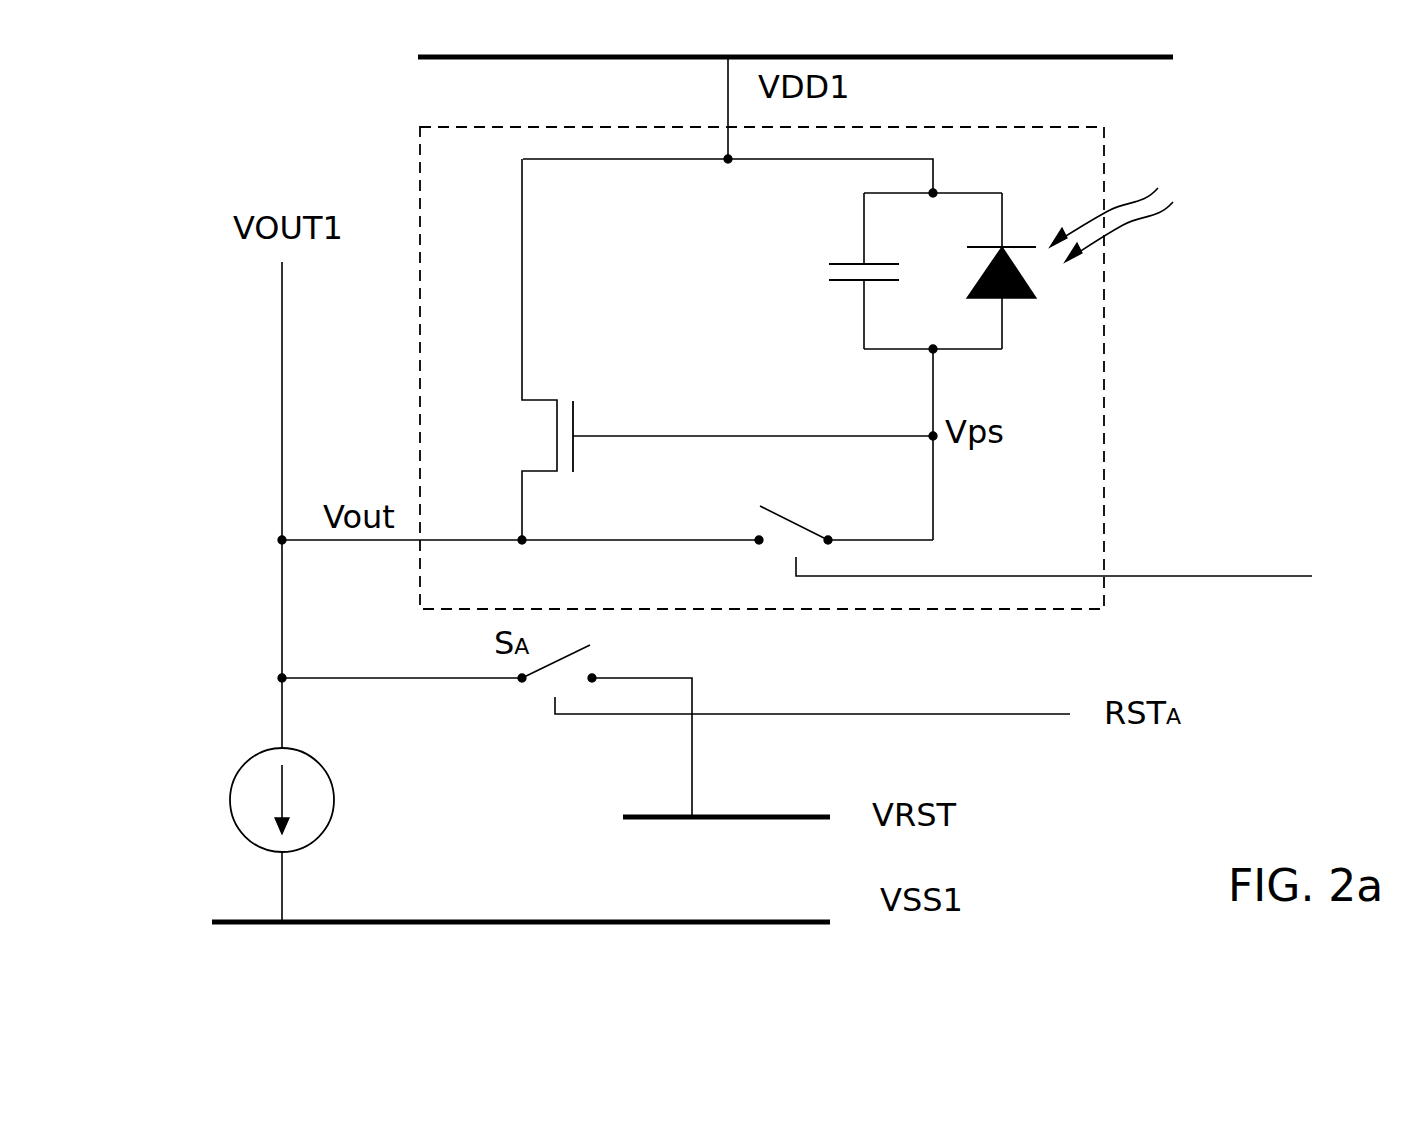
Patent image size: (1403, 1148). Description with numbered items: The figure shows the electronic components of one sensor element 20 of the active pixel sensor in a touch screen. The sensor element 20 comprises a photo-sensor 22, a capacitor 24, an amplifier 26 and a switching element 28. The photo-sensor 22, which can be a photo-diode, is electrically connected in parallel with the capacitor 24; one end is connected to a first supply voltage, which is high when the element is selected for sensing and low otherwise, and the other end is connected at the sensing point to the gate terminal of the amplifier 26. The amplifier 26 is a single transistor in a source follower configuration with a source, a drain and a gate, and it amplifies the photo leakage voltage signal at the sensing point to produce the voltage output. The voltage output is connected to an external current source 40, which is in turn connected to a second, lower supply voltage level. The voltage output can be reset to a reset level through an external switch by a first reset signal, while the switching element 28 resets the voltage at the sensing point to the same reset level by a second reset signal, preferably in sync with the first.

The sensor element 20 is at (1104, 437).
The photo-sensor 22 is at (1095, 256).
The capacitor 24 is at (887, 271).
The amplifier 26 is at (708, 349).
The switching element 28 is at (1034, 554).
The current source 40 is at (288, 783).